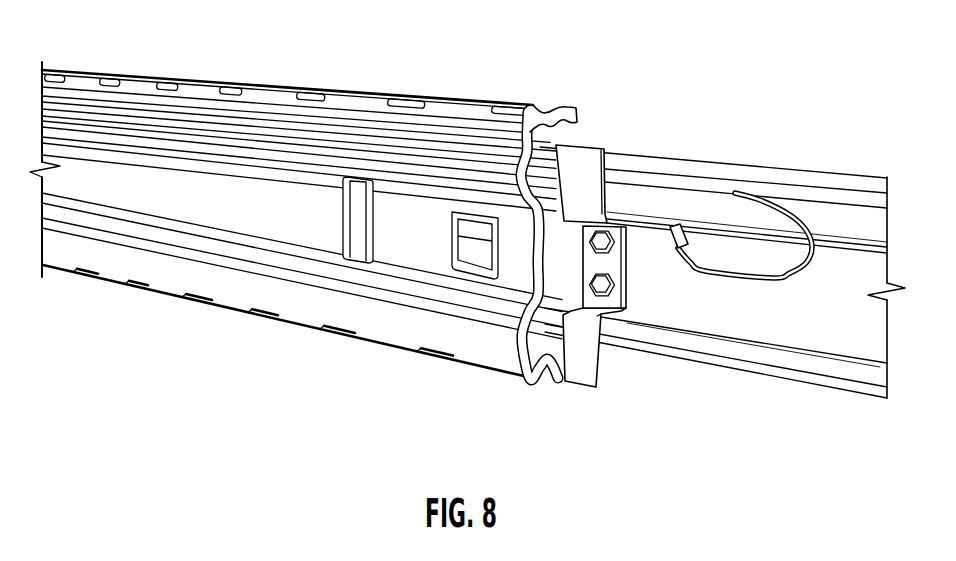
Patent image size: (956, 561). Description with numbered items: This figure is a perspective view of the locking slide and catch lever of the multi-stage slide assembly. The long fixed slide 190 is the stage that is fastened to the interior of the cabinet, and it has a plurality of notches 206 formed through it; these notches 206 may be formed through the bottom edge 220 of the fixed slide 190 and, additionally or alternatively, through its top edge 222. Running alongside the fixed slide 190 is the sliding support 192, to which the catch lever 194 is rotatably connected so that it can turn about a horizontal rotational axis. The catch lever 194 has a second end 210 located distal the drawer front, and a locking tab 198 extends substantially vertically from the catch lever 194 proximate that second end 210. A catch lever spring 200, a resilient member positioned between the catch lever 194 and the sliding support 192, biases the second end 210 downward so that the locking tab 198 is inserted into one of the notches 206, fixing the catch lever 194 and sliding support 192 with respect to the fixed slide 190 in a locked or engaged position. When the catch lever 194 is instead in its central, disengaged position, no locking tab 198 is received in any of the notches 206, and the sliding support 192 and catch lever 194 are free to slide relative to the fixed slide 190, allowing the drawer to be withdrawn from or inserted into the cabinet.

The fixed slide 190 is at (228, 220).
The sliding support 192 is at (768, 177).
The catch lever 194 is at (733, 310).
The locking tab 198 is at (590, 157).
The catch lever spring 200 is at (681, 225).
The notches 206 is at (308, 95).
The second end 210 is at (548, 210).
The bottom edge 220 is at (391, 354).
The top edge 222 is at (267, 74).